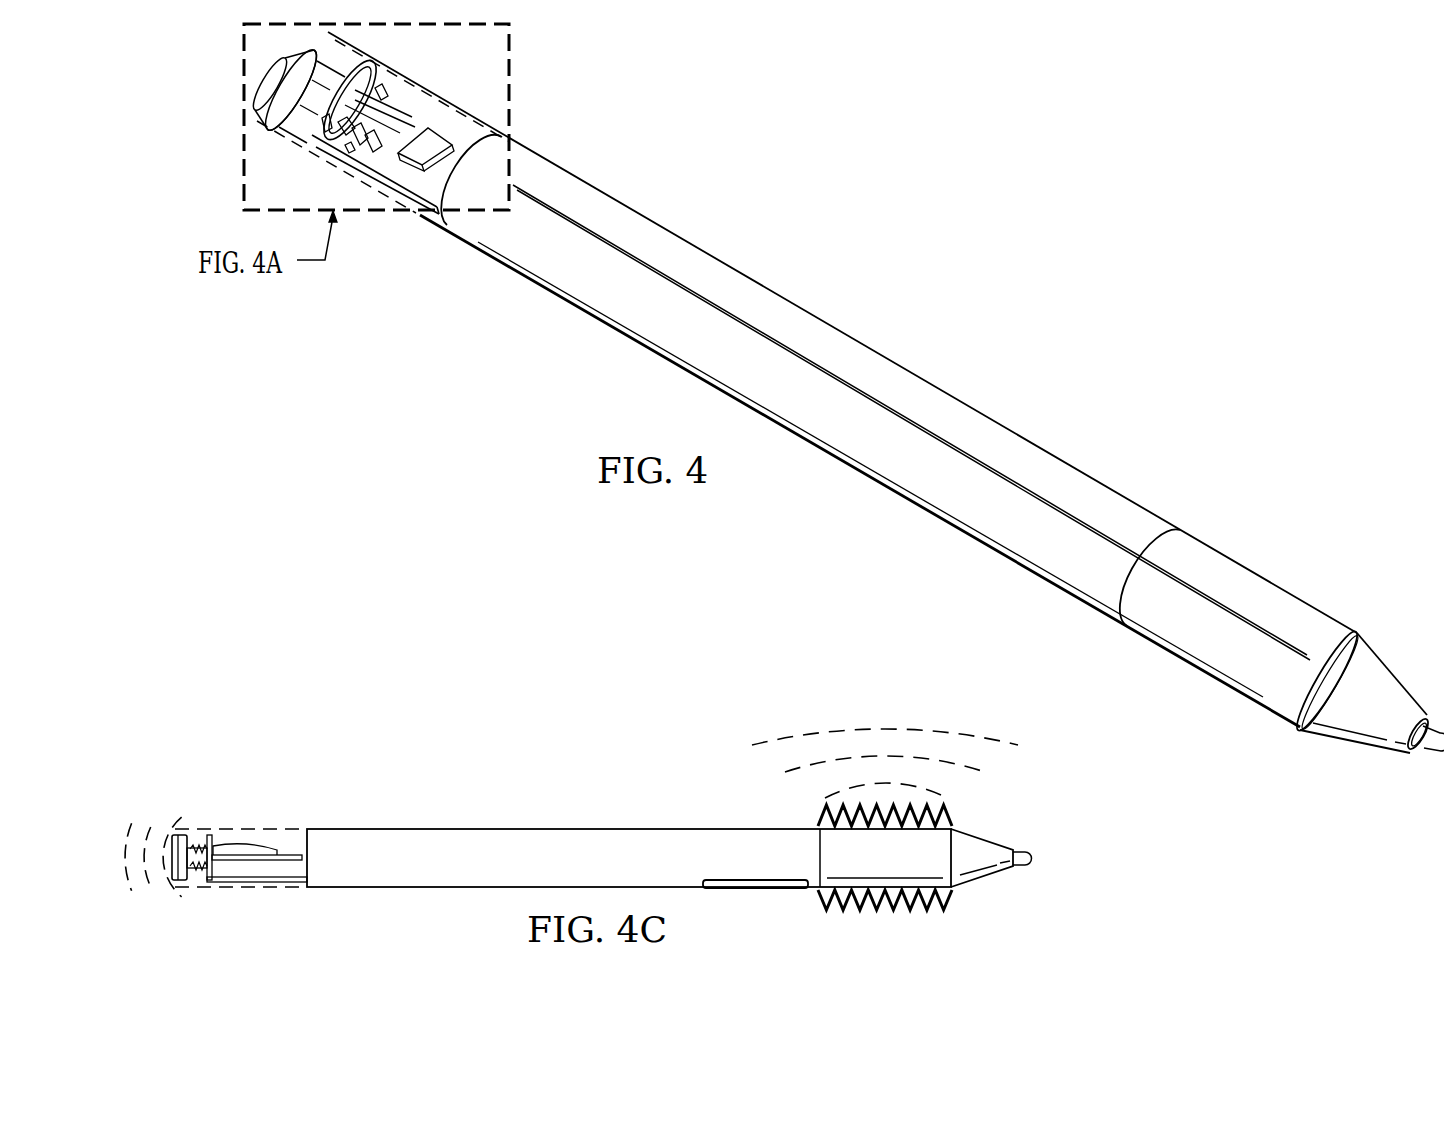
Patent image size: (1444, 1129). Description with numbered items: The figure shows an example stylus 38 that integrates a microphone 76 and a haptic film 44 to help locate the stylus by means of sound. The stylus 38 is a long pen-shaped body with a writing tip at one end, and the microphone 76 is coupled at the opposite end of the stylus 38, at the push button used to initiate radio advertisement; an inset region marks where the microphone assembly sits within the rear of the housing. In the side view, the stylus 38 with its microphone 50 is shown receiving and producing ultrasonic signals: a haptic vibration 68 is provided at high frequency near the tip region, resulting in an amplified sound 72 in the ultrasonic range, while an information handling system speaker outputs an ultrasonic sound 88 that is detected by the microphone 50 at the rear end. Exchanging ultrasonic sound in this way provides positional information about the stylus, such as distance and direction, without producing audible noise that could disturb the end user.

In FIG. 4, the stylus 38 is at (836, 253).
In FIG. 4, the haptic film 44 is at (1264, 581).
In FIG. 4, the microphone 76 is at (284, 163).
In FIG. 4C, the microphone 50 is at (190, 870).
In FIG. 4C, the haptic vibration 68 is at (953, 817).
In FIG. 4C, the amplified sound 72 is at (936, 732).
In FIG. 4C, the ultrasonic sound 88 is at (153, 817).